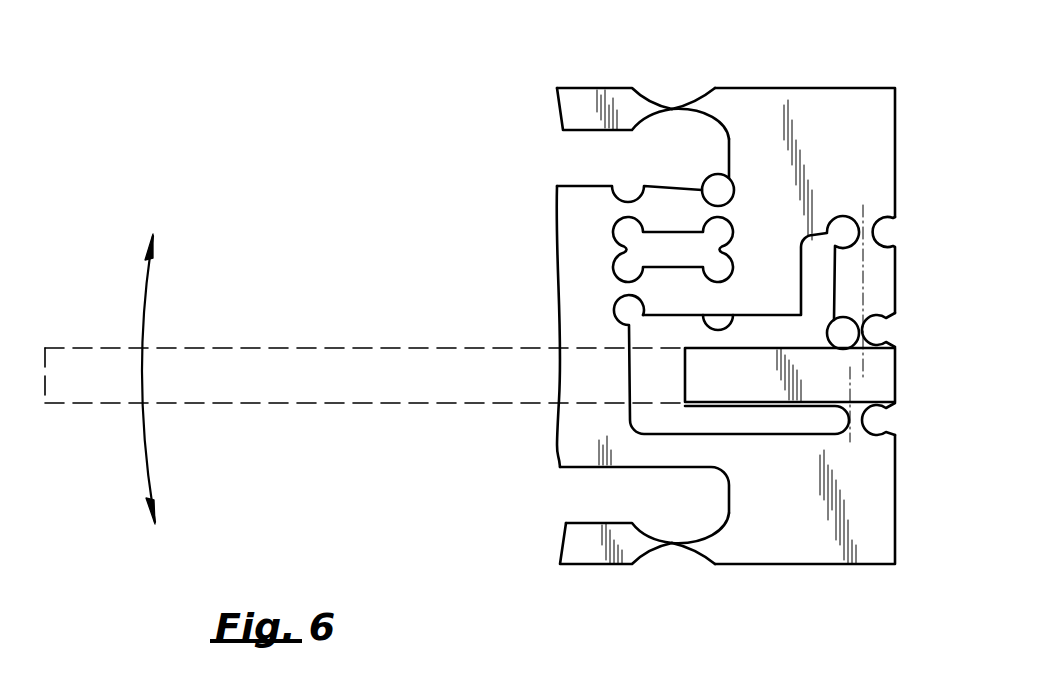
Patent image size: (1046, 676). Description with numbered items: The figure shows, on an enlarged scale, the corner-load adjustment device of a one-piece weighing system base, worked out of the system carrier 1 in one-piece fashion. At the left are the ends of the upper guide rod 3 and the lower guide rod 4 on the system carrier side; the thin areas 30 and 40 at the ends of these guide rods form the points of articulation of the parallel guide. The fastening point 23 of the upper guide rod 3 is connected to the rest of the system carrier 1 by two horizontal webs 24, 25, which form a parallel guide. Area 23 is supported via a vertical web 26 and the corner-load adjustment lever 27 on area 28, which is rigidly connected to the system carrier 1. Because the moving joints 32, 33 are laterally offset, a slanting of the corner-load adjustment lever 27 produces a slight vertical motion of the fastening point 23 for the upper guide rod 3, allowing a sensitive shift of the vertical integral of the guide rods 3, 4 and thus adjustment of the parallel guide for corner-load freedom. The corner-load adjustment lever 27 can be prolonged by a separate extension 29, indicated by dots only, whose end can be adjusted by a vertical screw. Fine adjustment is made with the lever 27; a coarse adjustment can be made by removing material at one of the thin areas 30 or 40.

The system carrier 1 is at (572, 272).
The upper guide rod 3 is at (584, 101).
The lower guide rod 4 is at (587, 547).
The fastening point 23 is at (761, 112).
The horizontal web 24 is at (662, 203).
The horizontal web 25 is at (682, 298).
The vertical web 26 is at (877, 272).
The corner-load adjustment lever 27 is at (874, 377).
The area 28 is at (790, 537).
The extension 29 is at (333, 381).
The thin area 30 is at (673, 108).
The moving joint 32 is at (862, 419).
The moving joint 33 is at (870, 330).
The thin area 40 is at (673, 545).